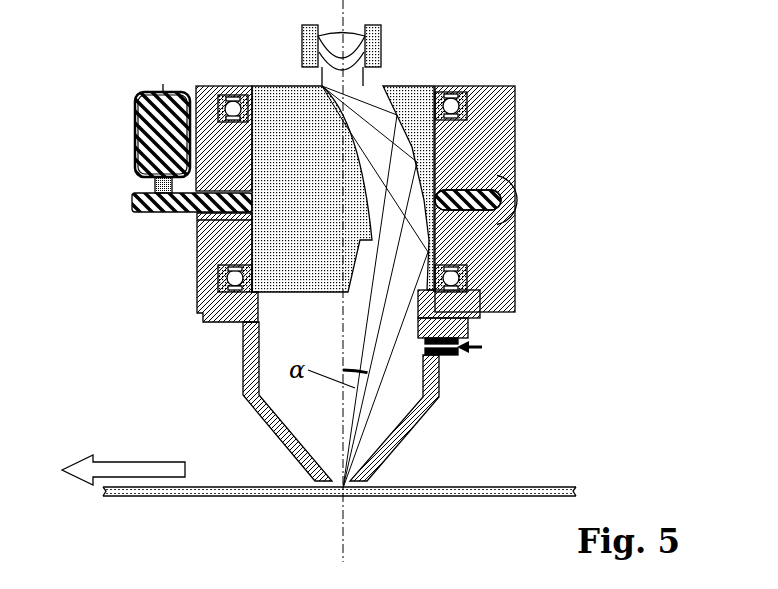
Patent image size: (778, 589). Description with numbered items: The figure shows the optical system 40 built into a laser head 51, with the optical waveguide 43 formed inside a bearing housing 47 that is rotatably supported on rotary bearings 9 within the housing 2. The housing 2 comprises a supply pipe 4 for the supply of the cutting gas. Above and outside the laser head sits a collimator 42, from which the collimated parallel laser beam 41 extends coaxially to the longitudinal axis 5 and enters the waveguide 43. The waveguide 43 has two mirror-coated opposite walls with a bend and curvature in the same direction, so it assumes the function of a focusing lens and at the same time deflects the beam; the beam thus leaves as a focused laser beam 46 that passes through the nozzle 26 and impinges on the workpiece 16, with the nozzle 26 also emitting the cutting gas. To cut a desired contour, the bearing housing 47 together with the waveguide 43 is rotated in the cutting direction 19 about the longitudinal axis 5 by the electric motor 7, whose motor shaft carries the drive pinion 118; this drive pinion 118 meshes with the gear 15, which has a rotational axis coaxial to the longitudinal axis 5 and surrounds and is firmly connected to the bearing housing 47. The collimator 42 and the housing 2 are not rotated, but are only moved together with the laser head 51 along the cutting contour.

The housing 2 is at (513, 277).
The supply pipe 4 is at (458, 352).
The longitudinal axis 5 is at (346, 523).
The electric motor 7 is at (137, 98).
The bearings 9 is at (224, 265).
The gear 15 is at (488, 222).
The workpiece 16 is at (562, 485).
The cutting direction 19 is at (122, 460).
The nozzle 26 is at (280, 442).
The optical system 40 is at (403, 370).
The parallel laser beam 41 is at (357, 80).
The collimator 42 is at (304, 46).
The optical waveguide 43 is at (400, 171).
The focused laser beam 46 is at (363, 403).
The bearing housing 47 is at (305, 143).
The laser head 51 is at (222, 358).
The drive pinion 118 is at (134, 204).